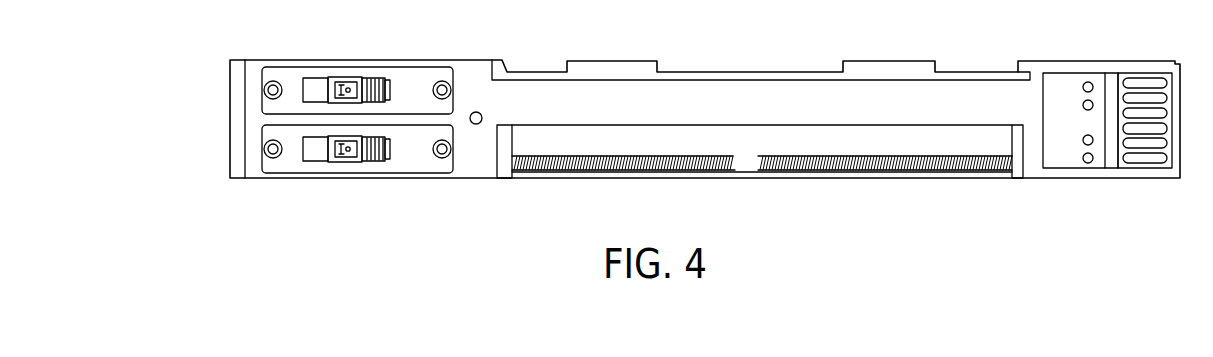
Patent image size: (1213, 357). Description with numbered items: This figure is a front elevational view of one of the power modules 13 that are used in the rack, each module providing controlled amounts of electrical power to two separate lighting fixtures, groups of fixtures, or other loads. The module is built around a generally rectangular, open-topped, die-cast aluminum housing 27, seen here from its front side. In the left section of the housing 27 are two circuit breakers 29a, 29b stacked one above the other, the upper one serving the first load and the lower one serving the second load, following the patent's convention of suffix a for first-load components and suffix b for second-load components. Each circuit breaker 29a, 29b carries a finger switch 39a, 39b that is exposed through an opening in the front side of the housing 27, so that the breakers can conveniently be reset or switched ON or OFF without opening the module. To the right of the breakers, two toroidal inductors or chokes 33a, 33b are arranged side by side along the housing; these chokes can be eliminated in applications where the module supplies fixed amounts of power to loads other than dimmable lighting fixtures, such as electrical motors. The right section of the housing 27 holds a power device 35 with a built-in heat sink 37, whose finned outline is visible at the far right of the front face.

The power module 13 is at (213, 95).
The housing 27 is at (757, 173).
The circuit breaker 29a is at (288, 81).
The circuit breaker 29b is at (288, 134).
The toroidal inductor or choke 33a is at (920, 157).
The toroidal inductor or choke 33b is at (688, 157).
The power device 35 is at (1071, 84).
The heat sink 37 is at (1151, 97).
The finger switch 39a is at (377, 82).
The finger switch 39b is at (386, 134).